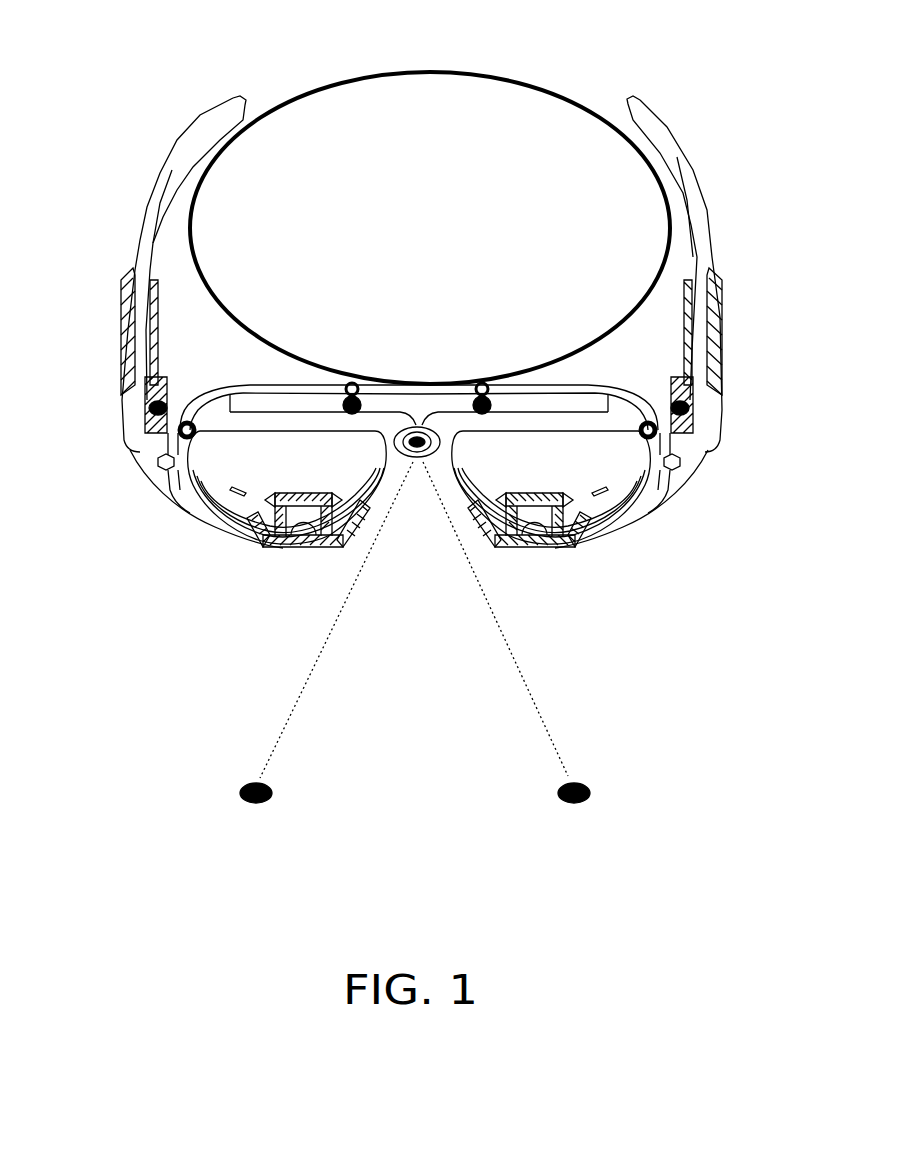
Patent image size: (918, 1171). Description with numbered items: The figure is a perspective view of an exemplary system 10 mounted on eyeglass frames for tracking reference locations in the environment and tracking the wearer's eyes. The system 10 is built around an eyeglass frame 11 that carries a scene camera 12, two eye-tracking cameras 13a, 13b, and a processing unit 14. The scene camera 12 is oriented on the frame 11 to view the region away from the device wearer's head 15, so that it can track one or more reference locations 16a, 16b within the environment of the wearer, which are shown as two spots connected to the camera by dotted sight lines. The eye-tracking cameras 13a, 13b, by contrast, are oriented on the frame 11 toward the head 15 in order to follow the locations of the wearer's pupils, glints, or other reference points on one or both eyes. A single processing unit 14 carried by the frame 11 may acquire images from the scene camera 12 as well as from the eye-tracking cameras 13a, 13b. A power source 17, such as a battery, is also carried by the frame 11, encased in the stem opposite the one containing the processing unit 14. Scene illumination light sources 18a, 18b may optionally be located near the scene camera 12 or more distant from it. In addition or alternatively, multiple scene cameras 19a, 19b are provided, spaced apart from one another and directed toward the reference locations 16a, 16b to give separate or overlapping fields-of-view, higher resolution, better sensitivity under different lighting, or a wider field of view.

The system 10 is at (421, 409).
The eyeglass frame 11 is at (149, 274).
The scene camera 12 is at (418, 460).
The eye-tracking camera 13a is at (301, 552).
The eye-tracking camera 13b is at (534, 552).
The processing unit 14 is at (741, 365).
The device wearer's head 15 is at (429, 58).
The reference location 16a is at (232, 793).
The reference location 16b is at (548, 793).
The power source 17 is at (113, 360).
The scene illumination light source 18a is at (350, 420).
The scene illumination light source 18b is at (484, 420).
The scene camera 19a is at (185, 442).
The scene camera 19b is at (650, 442).